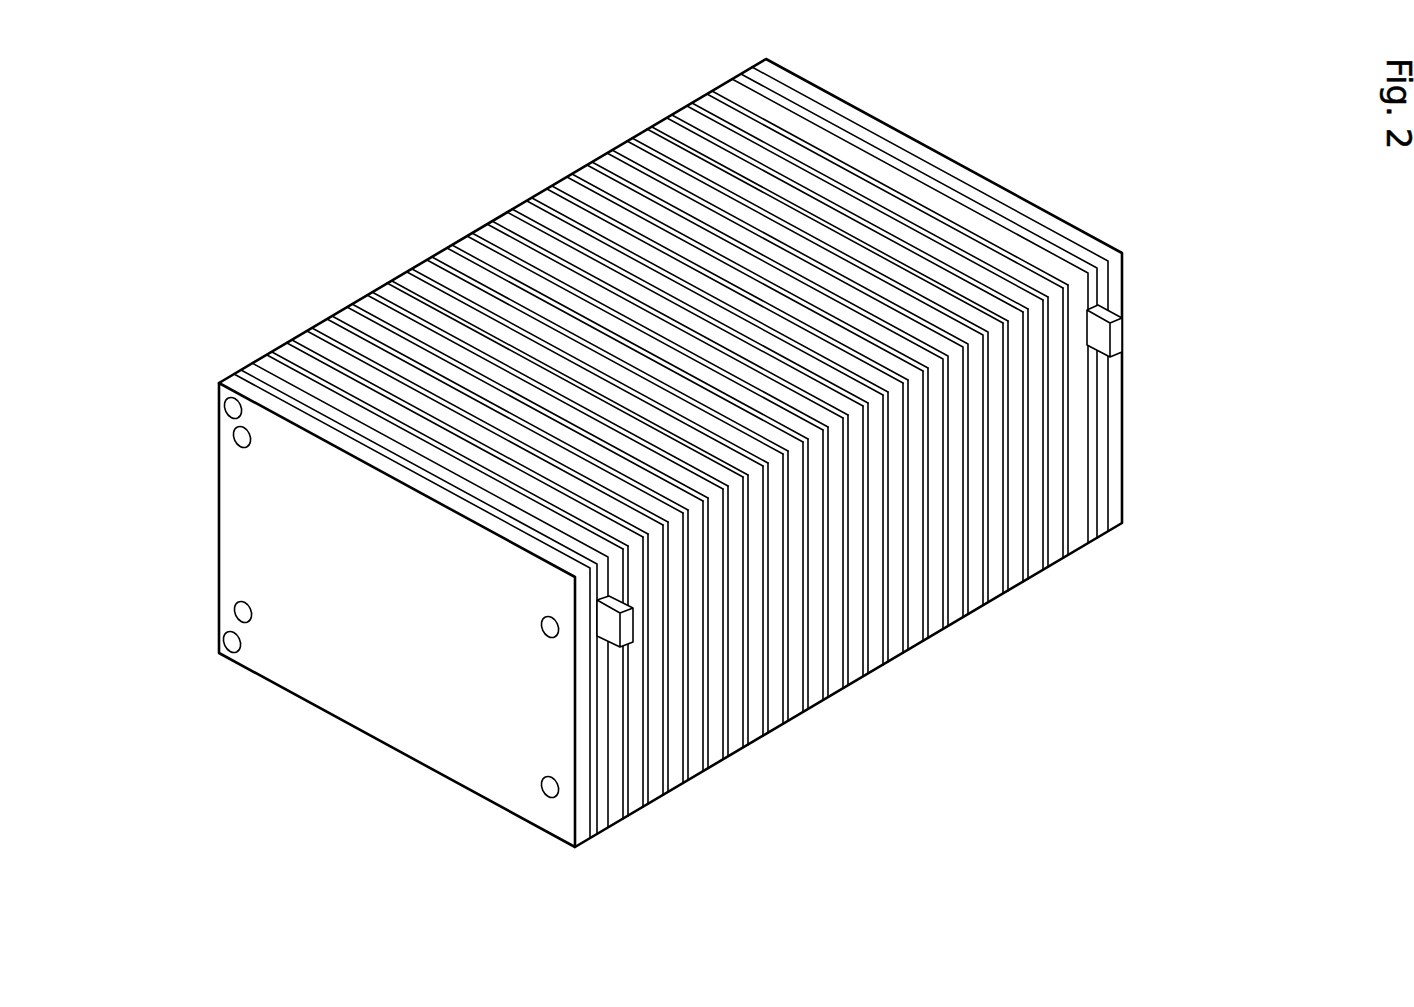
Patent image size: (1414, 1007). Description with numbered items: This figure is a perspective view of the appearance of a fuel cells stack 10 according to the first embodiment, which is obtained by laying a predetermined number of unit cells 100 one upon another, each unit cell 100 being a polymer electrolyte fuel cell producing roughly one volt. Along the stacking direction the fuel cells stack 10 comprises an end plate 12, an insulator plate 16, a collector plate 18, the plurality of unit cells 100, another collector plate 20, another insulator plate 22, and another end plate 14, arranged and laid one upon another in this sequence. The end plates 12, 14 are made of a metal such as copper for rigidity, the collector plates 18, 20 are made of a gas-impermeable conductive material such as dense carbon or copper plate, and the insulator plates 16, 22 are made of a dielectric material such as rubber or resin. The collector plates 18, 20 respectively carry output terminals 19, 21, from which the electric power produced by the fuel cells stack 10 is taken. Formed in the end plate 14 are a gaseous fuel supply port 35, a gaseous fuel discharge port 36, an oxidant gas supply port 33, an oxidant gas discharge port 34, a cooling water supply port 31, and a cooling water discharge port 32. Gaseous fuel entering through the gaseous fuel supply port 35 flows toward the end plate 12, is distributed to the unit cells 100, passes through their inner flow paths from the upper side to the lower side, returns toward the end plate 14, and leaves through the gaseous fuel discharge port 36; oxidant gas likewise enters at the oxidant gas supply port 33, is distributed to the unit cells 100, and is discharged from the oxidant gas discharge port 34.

The fuel cells stack 10 is at (455, 160).
The end plate 12 is at (1123, 505).
The end plate 14 is at (548, 822).
The insulator plate 16 is at (1104, 534).
The collector plate 18 is at (1092, 533).
The output terminal 19 is at (1103, 339).
The collector plate 20 is at (604, 830).
The output terminal 21 is at (607, 623).
The insulator plate 22 is at (591, 834).
The cooling water supply port 31 is at (250, 442).
The cooling water discharge port 32 is at (250, 608).
The oxidant gas supply port 33 is at (542, 623).
The oxidant gas discharge port 34 is at (543, 787).
The gaseous fuel supply port 35 is at (224, 404).
The gaseous fuel discharge port 36 is at (218, 647).
The unit cell 100 is at (937, 631).